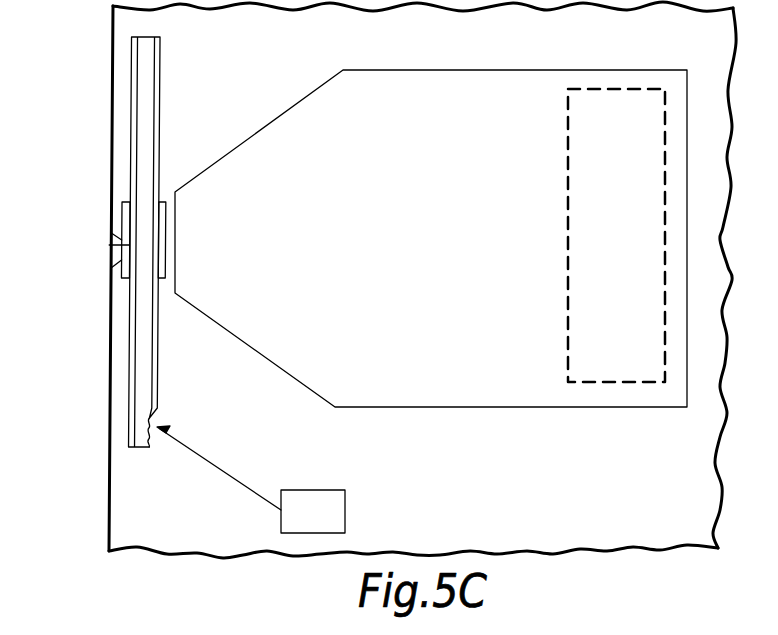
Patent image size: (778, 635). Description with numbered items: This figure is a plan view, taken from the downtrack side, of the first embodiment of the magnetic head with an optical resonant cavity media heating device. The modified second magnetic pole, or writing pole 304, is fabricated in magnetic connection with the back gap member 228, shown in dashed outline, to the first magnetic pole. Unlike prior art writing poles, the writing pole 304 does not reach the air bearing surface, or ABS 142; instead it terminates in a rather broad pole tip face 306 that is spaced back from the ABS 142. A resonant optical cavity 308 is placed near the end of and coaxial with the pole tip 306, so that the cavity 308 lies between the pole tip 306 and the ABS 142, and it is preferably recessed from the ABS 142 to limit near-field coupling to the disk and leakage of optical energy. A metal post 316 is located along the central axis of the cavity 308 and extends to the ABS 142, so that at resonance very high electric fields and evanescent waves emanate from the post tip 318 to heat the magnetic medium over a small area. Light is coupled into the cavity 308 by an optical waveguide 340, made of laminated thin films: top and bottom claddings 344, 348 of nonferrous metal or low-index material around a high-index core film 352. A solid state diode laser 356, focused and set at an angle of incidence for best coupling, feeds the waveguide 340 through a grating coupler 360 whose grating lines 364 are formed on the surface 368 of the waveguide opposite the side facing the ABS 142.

The air bearing surface (ABS) 142 is at (112, 126).
The writing pole 304 is at (493, 157).
The pole tip face 306 is at (168, 237).
The metal post 316 is at (113, 233).
The post tip end 318 is at (112, 246).
The resonant optical cavity 308 is at (113, 268).
The optical waveguide 340 is at (138, 329).
The top cladding layer 344 is at (129, 377).
The core film 352 is at (142, 406).
The bottom cladding layer 348 is at (156, 351).
The grating coupler 360 is at (156, 416).
The waveguide surface 368 is at (177, 428).
The grating lines 364 is at (156, 448).
The solid state diode laser 356 is at (300, 490).
The magnetic back gap piece 228 is at (567, 300).